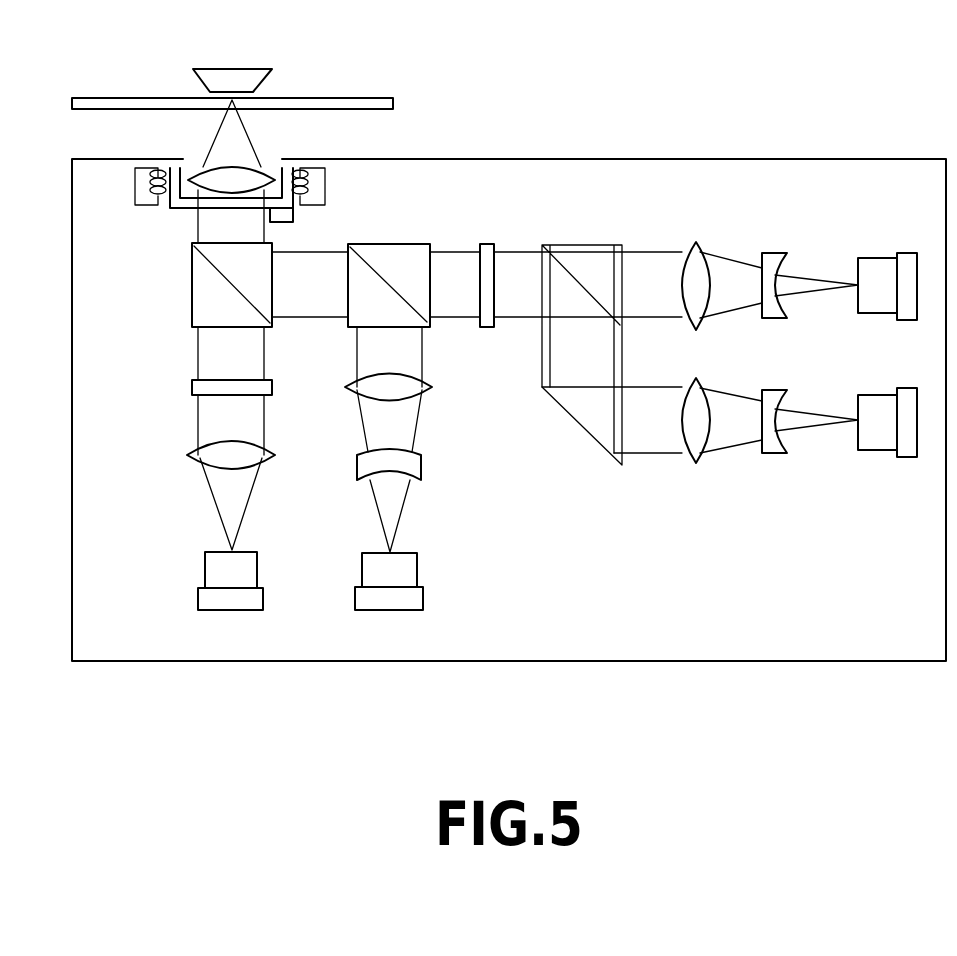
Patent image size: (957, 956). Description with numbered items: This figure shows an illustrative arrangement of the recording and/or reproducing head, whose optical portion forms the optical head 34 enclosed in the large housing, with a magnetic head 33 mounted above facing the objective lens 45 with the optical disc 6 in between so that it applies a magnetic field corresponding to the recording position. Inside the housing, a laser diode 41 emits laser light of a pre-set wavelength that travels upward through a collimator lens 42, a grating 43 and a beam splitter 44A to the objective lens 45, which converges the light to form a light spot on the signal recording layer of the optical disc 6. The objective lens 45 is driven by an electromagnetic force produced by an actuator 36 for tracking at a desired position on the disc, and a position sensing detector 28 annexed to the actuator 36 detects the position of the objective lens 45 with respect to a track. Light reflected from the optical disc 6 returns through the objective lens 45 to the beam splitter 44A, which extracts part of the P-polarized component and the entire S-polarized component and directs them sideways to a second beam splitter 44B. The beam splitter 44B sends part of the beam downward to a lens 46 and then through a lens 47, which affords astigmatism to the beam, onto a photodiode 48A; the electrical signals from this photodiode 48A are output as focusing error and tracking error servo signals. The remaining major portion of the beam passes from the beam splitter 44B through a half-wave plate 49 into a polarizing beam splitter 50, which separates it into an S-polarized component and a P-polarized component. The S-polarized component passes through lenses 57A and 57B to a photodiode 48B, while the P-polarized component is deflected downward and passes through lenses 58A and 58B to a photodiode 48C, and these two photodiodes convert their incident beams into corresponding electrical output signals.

The optical disc 6 is at (340, 98).
The position sensing detector 28 is at (285, 218).
The magnetic head 33 is at (237, 69).
The optical head 34 is at (680, 159).
The actuator 36 is at (283, 163).
The laser diode 41 is at (205, 572).
The collimator lens 42 is at (190, 453).
The grating 43 is at (191, 385).
The beam splitter 44A is at (191, 283).
The beam splitter 44B is at (388, 244).
The objective lens 45 is at (226, 178).
The lens 46 is at (434, 387).
The lens 47 is at (424, 466).
The photodiode 48A is at (424, 573).
The photodiode 48B is at (880, 258).
The photodiode 48C is at (878, 452).
The half-wave plate 49 is at (491, 244).
The polarizing beam splitter 50 is at (575, 418).
The lens 57A is at (700, 242).
The lens 57B is at (775, 253).
The lens 58A is at (692, 463).
The lens 58B is at (770, 455).